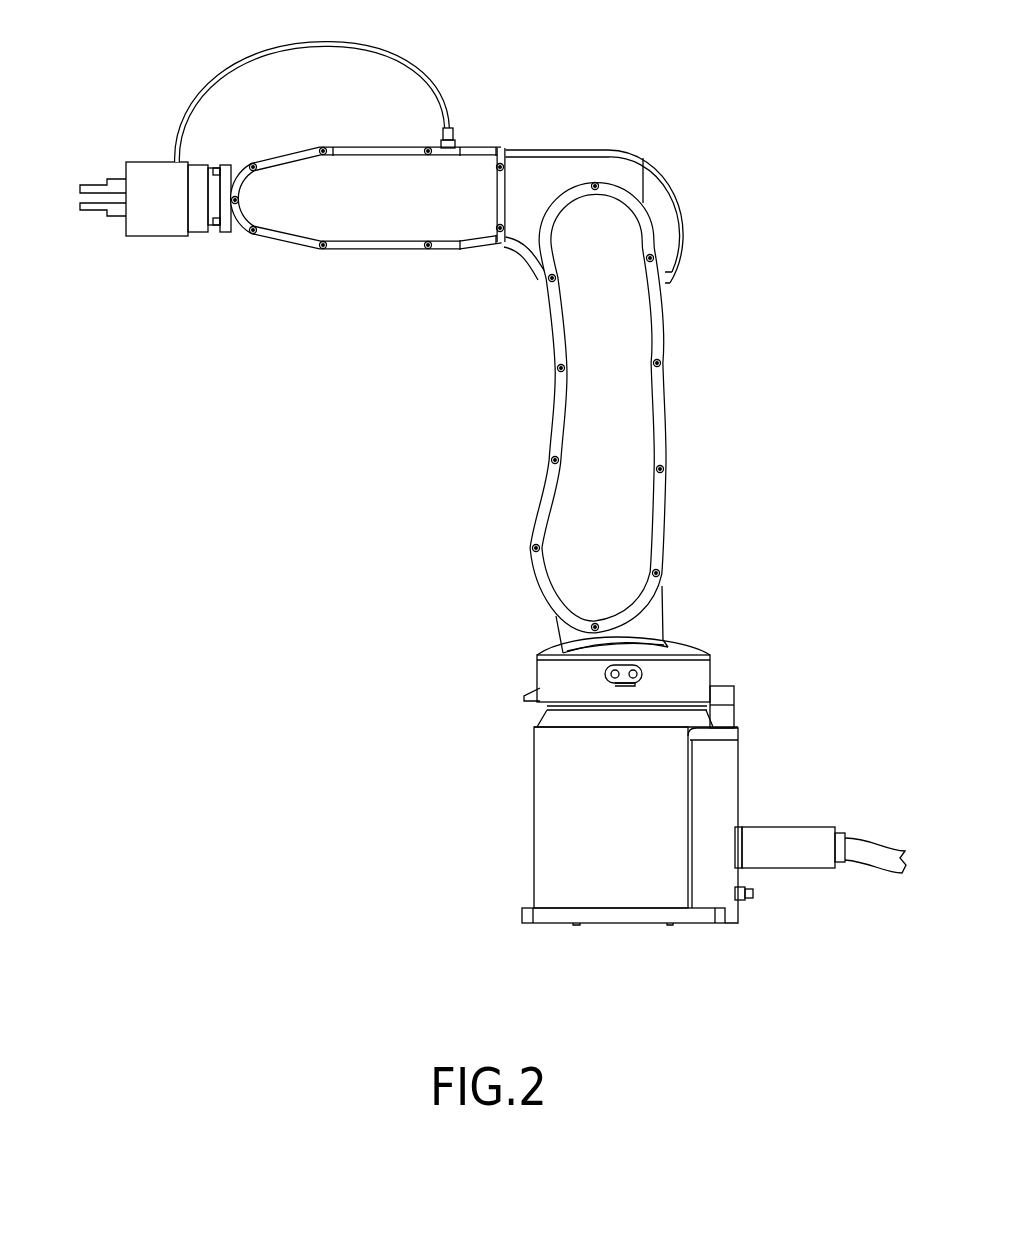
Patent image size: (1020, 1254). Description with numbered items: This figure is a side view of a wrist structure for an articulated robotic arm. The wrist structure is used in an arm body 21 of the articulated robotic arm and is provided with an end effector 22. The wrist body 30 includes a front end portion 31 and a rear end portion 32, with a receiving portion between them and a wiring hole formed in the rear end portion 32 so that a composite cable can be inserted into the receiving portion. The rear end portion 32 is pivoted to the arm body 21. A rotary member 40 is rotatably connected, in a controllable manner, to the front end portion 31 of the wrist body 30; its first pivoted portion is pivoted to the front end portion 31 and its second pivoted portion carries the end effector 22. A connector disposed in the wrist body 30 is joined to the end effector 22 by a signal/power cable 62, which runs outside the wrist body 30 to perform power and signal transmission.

The arm body 21 is at (633, 157).
The end effector 22 is at (160, 227).
The wrist body 30 is at (368, 211).
The front end portion 31 is at (241, 220).
The rear end portion 32 is at (500, 182).
The rotary member 40 is at (228, 234).
The signal/power cable 62 is at (221, 73).